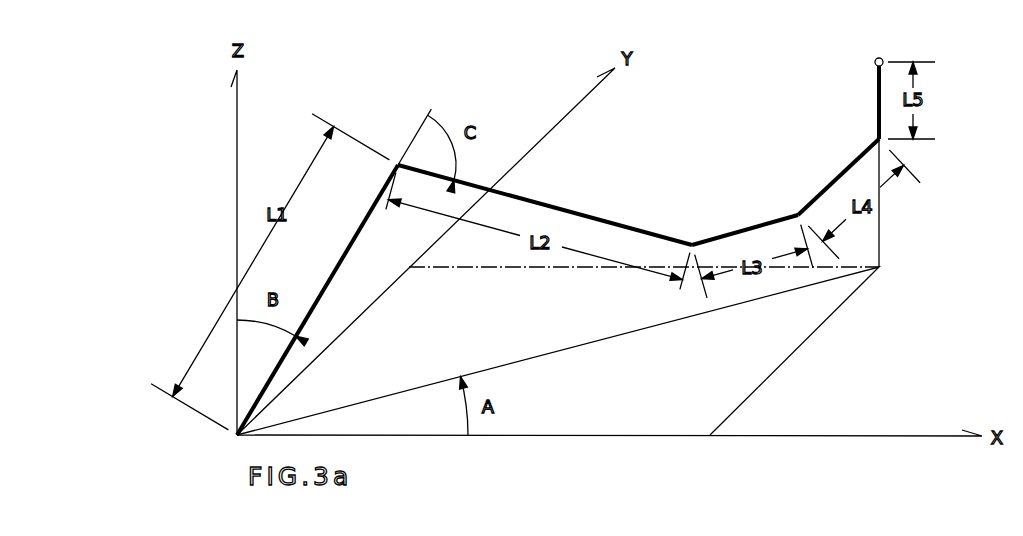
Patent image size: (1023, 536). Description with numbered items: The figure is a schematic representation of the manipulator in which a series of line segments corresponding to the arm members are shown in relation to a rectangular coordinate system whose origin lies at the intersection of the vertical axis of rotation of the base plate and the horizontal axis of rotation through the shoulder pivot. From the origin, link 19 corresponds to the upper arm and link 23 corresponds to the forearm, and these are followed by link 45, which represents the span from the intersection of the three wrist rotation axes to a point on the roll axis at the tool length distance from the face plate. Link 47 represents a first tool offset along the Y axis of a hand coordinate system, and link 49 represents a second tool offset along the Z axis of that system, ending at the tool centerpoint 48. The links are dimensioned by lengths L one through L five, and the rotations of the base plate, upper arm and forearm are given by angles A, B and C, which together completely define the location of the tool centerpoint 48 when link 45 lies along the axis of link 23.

The link 19 is at (373, 207).
The link 23 is at (540, 203).
The link 45 is at (745, 226).
The link 47 is at (841, 175).
The tool centerpoint 48 is at (875, 56).
The link 49 is at (877, 90).